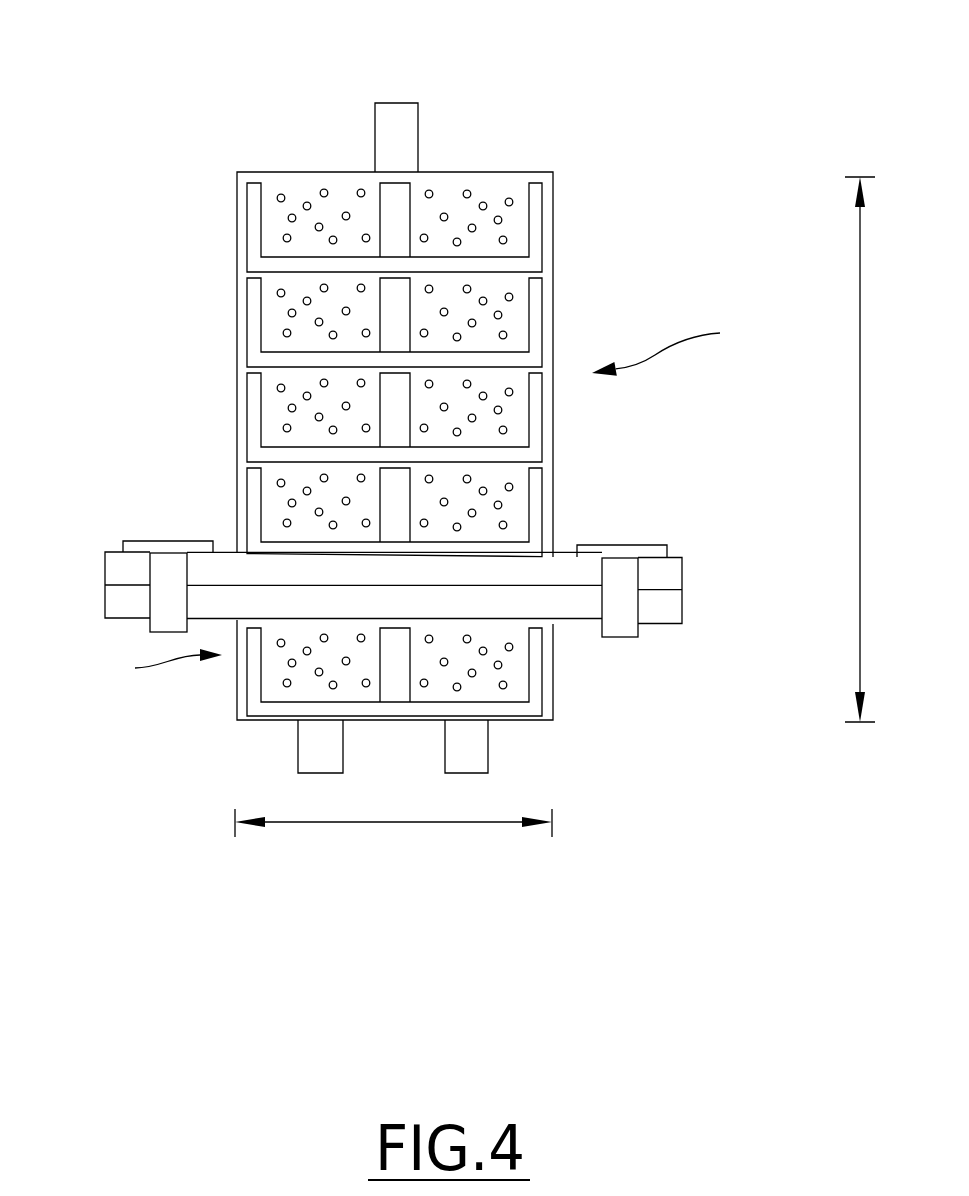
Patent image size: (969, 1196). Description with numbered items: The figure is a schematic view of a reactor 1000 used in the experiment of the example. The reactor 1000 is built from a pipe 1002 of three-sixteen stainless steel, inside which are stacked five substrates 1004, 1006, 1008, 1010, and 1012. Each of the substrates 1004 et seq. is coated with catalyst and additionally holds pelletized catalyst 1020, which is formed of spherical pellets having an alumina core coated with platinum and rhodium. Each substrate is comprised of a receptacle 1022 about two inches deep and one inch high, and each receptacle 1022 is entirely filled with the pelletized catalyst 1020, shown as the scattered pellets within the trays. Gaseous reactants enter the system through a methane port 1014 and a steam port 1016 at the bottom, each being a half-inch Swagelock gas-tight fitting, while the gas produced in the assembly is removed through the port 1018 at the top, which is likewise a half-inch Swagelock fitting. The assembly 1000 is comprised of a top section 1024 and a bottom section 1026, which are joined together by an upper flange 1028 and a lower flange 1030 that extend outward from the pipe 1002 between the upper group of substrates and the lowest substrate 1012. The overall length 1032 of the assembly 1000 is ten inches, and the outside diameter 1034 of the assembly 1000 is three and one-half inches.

The reactor 1000 is at (299, 74).
The stainless steel pipe 1002 is at (235, 315).
The substrate 1004 is at (533, 228).
The substrate 1006 is at (533, 323).
The substrate 1008 is at (533, 418).
The substrate 1010 is at (533, 512).
The substrate 1012 is at (533, 680).
The methane port 1014 is at (318, 752).
The steam port 1016 is at (475, 752).
The port 1018 is at (396, 117).
The pelletized catalyst 1020 is at (283, 190).
The receptacle 1022 is at (487, 190).
The top section 1024 is at (692, 346).
The bottom section 1026 is at (142, 668).
The upper flange 1028 is at (665, 573).
The lower flange 1030 is at (663, 615).
The overall length 1032 is at (855, 465).
The outside diameter 1034 is at (437, 822).